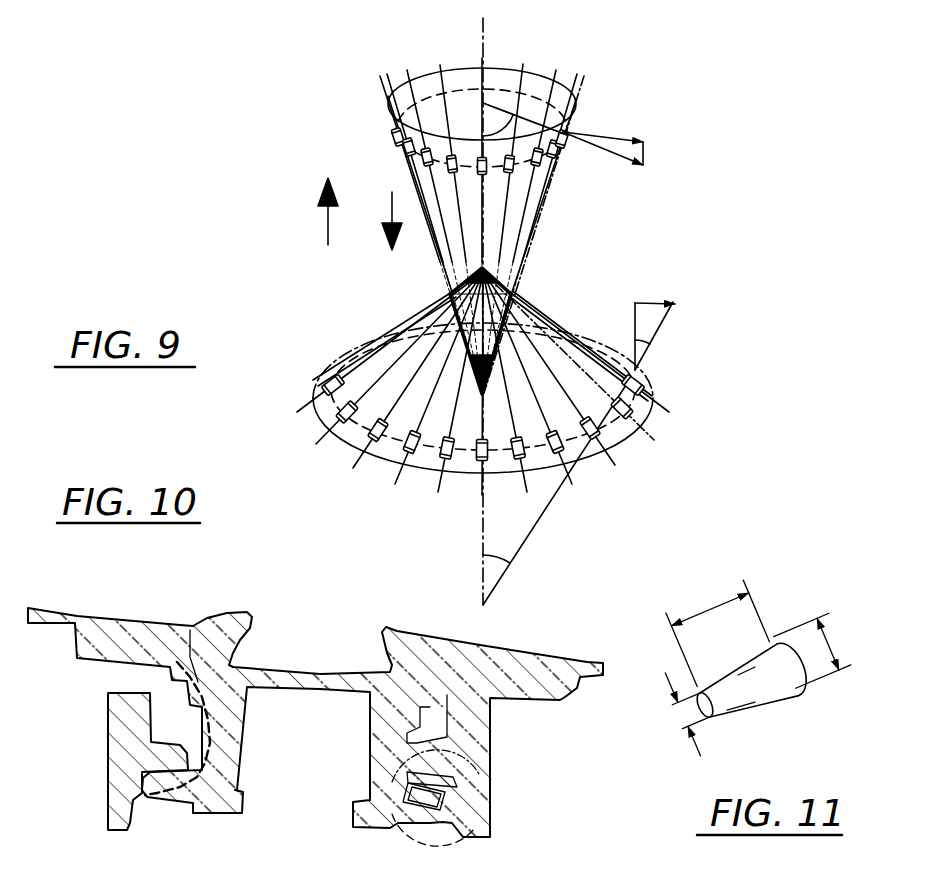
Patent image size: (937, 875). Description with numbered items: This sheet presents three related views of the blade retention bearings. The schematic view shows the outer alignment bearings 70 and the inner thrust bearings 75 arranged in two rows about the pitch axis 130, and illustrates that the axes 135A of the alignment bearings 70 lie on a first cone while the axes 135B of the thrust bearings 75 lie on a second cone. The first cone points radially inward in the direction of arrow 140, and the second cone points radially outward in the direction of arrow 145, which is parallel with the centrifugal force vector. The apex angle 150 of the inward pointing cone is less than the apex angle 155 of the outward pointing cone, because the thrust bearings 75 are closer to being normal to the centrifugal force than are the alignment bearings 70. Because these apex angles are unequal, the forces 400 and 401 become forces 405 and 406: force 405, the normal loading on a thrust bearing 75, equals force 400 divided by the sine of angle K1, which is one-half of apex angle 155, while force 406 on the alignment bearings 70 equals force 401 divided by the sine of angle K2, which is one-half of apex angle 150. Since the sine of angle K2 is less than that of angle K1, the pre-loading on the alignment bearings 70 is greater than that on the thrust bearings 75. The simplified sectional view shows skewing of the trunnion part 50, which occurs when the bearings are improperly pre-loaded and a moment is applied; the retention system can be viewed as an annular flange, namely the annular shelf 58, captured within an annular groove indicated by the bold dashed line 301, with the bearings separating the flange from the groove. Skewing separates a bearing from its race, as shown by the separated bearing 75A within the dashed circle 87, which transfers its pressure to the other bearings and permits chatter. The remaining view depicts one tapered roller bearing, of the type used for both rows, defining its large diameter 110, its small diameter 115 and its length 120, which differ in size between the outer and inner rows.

In FIG. 9, the pitch axis 130 is at (483, 20).
In FIG. 9, the outer bearings 70 is at (563, 134).
In FIG. 11, the outer bearings 70 is at (772, 690).
In FIG. 9, the inner bearings 75 is at (653, 386).
In FIG. 11, the inner bearings 75 is at (755, 700).
In FIG. 9, the force 401 is at (647, 148).
In FIG. 9, the force on alignment bearings 406 is at (616, 158).
In FIG. 9, the angle K2 is at (603, 150).
In FIG. 9, the axes of outer row bearings 135A is at (538, 213).
In FIG. 9, the axes of inner row bearings 135B is at (551, 318).
In FIG. 9, the arrow 145 is at (324, 236).
In FIG. 9, the arrow 140 is at (386, 207).
In FIG. 9, the apex angle of second cone 155 is at (452, 292).
In FIG. 9, the apex angle of first cone 150 is at (487, 350).
In FIG. 9, the force 400 is at (632, 328).
In FIG. 9, the angle K1 is at (656, 316).
In FIG. 9, the force on thrust bearing 405 is at (668, 338).
In FIG. 10, the annular groove 301 is at (190, 632).
In FIG. 10, the annular shelf 58 is at (163, 758).
In FIG. 10, the trunnion part 50 is at (527, 688).
In FIG. 10, the dashed circle 87 is at (418, 846).
In FIG. 10, the separated bearing 75A is at (463, 820).
In FIG. 11, the length 120 is at (711, 606).
In FIG. 11, the large diameter 110 is at (838, 648).
In FIG. 11, the small diameter 115 is at (702, 755).